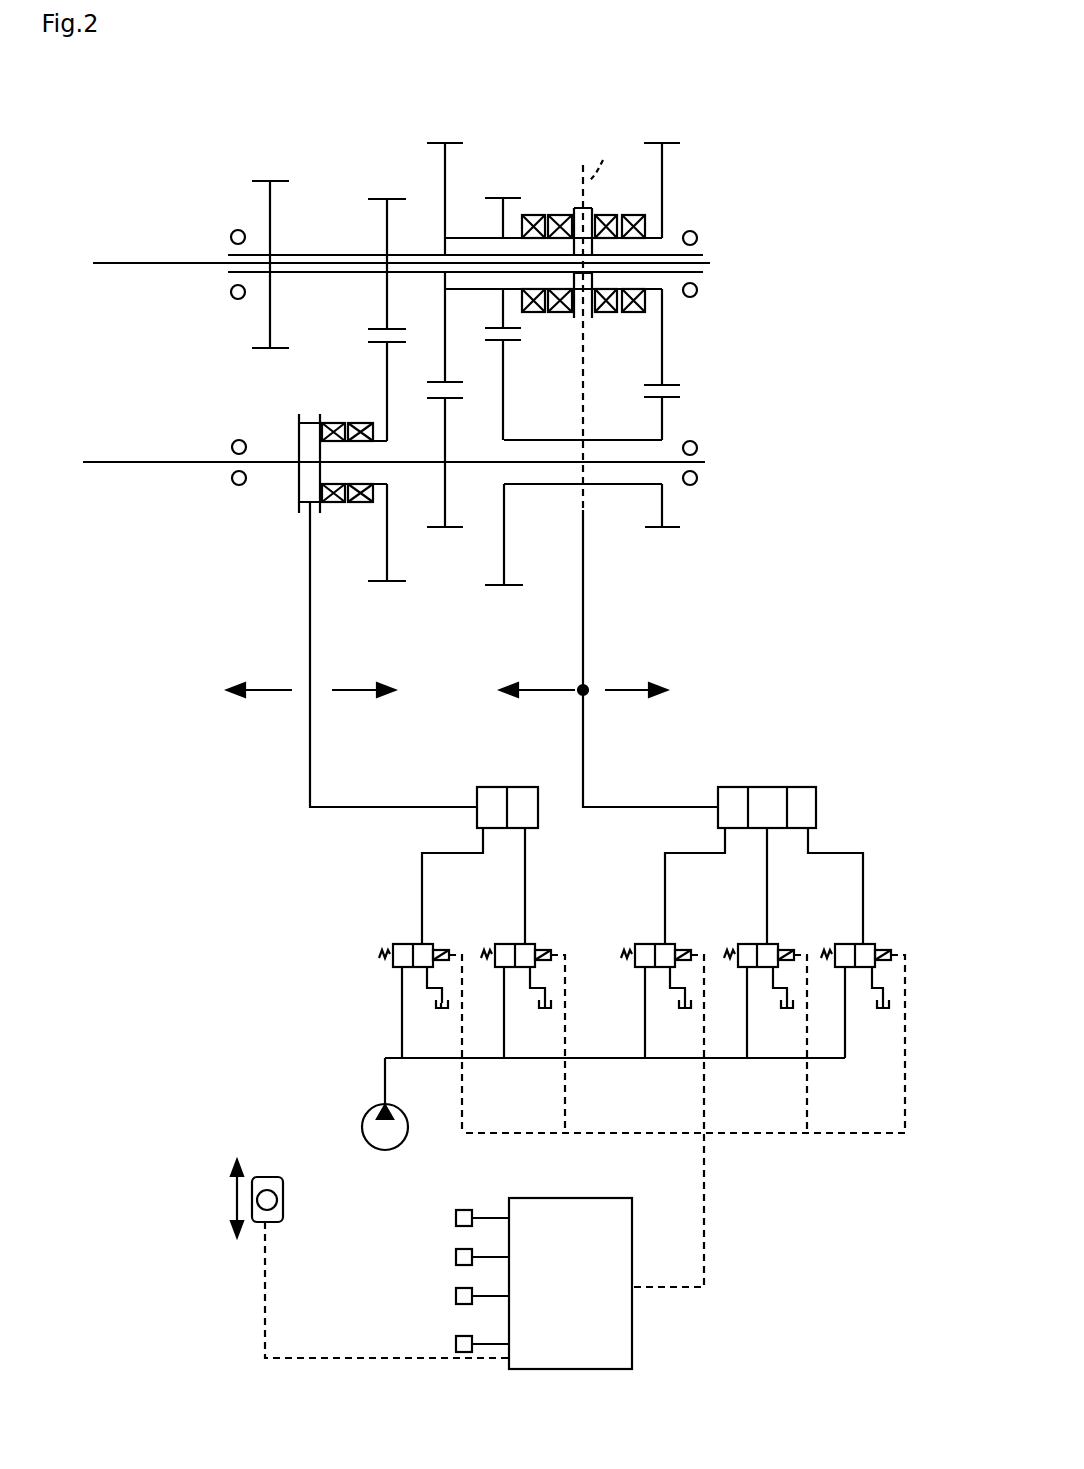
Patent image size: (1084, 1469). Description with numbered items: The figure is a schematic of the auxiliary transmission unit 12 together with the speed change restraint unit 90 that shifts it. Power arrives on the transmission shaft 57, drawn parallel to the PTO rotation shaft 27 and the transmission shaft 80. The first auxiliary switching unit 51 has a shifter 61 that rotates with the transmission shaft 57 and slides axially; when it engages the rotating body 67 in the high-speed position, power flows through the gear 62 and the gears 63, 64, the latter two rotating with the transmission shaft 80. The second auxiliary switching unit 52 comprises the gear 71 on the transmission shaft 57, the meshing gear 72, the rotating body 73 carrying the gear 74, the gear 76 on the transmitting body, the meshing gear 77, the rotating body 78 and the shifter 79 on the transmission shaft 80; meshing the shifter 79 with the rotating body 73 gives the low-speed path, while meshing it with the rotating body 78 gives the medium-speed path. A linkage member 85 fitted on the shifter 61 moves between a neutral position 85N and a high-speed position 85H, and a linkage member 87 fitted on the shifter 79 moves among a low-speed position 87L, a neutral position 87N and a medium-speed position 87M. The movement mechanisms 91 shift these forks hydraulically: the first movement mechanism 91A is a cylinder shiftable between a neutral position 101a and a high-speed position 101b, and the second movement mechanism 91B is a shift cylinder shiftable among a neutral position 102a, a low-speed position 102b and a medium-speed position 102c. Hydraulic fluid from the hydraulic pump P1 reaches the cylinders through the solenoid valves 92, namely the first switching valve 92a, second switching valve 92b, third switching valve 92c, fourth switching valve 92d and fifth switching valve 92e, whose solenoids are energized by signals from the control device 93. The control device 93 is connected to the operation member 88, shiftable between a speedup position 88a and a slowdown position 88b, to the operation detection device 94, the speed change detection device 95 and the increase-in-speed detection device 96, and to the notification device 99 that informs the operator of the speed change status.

The auxiliary transmission unit 12 is at (187, 88).
The PTO rotation shaft 27 is at (124, 262).
The first auxiliary switching unit 51 is at (400, 618).
The second auxiliary switching unit 52 is at (596, 130).
The transmission shaft 57 is at (130, 466).
The shifter 61 is at (289, 512).
The gear 62 is at (390, 553).
The gear 63 is at (386, 225).
The gear 64 is at (268, 203).
The rotating body 67 is at (330, 504).
The gear 71 is at (447, 497).
The gear 72 is at (444, 172).
The rotating body 73 is at (555, 316).
The gear 74 is at (502, 216).
The gear 76 is at (664, 510).
The gear 77 is at (664, 348).
The rotating body 78 is at (625, 216).
The shifter 79 is at (573, 322).
The transmission shaft 80 is at (703, 252).
The linkage member (shift fork) 85 is at (310, 752).
The neutral position 85N is at (266, 682).
The high-speed position 85H is at (345, 697).
The linkage member (shift fork) 87 is at (585, 588).
The low-speed position 87L is at (538, 682).
The neutral position 87N is at (586, 688).
The medium-speed position 87M is at (612, 700).
The operation member 88 is at (268, 1178).
The speedup position 88a is at (283, 1178).
The slowdown position 88b is at (283, 1221).
The speed change restraint unit 90 is at (811, 745).
The movement mechanisms 91 is at (671, 829).
The first movement mechanism 91A is at (493, 771).
The second movement mechanism 91B is at (831, 783).
The solenoid valves 92 is at (615, 1084).
The first switching valve 92a is at (403, 942).
The second switching valve 92b is at (505, 942).
The third switching valve 92c is at (747, 942).
The fourth switching valve 92d is at (648, 942).
The fifth switching valve 92e is at (862, 968).
The control device 93 is at (607, 1197).
The operation detection device 94 is at (455, 1216).
The speed change detection device 95 is at (455, 1255).
The increase-in-speed detection device 96 is at (455, 1294).
The notification device 99 is at (455, 1342).
The neutral position 101a is at (477, 822).
The high-speed position 101b is at (536, 828).
The neutral position (stop position) 102a is at (772, 786).
The low-speed position 102b is at (733, 786).
The medium-speed position 102c is at (816, 811).
The hydraulic pump P1 is at (362, 1124).